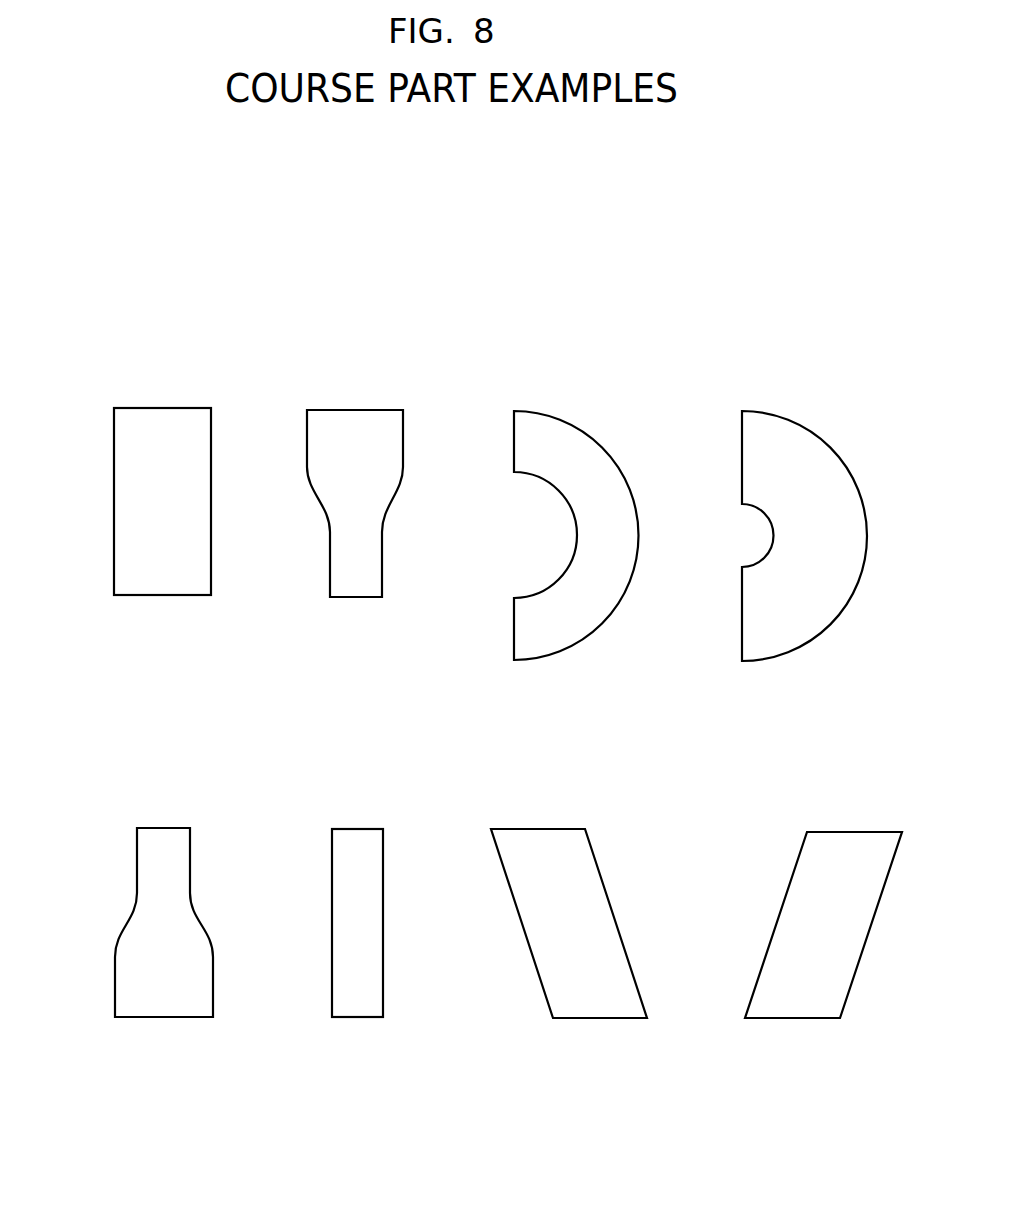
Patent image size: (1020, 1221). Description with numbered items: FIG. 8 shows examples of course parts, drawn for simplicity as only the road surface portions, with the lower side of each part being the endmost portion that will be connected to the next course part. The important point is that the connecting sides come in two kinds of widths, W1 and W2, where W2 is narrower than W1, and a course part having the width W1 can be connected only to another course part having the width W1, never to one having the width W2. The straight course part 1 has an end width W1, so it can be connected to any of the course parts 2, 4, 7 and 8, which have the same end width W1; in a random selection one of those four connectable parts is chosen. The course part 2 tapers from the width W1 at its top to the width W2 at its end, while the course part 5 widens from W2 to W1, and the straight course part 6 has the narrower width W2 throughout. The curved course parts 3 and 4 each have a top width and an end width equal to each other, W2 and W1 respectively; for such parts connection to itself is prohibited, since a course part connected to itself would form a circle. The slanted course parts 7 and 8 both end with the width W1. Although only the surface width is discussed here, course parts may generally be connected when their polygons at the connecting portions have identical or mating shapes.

The course part 1 is at (136, 477).
The course part 2 is at (333, 478).
The course part 3 is at (548, 509).
The course part 4 is at (777, 510).
The course part 5 is at (135, 889).
The course part 6 is at (328, 889).
The course part 7 is at (557, 890).
The course part 8 is at (822, 890).
The width W1 is at (211, 627).
The width W2 is at (382, 630).